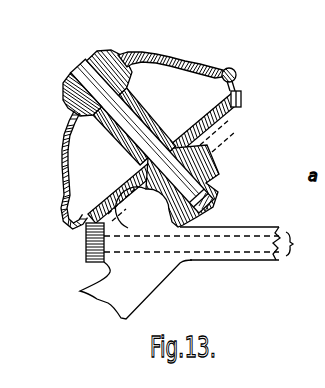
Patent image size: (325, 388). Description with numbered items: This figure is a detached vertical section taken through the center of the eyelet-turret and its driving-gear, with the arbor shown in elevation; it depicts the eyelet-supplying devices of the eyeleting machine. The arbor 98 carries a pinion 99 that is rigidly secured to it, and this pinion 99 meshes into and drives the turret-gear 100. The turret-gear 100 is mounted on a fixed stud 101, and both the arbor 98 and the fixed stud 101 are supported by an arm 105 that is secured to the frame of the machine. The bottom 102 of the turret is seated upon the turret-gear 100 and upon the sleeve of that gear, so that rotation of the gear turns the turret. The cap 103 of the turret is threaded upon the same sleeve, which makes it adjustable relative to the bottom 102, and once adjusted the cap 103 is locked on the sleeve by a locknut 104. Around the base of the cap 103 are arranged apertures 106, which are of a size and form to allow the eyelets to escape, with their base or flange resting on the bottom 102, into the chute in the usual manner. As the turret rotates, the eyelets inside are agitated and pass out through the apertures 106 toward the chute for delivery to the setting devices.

The arbor 98 is at (207, 243).
The pinion 99 is at (86, 250).
The turret-gear 100 is at (243, 100).
The fixed stud 101 is at (86, 68).
The bottom of the turret 102 is at (124, 180).
The cap of the turret 103 is at (64, 154).
The locknut 104 is at (64, 96).
The arm 105 is at (136, 289).
The apertures 106 is at (223, 76).